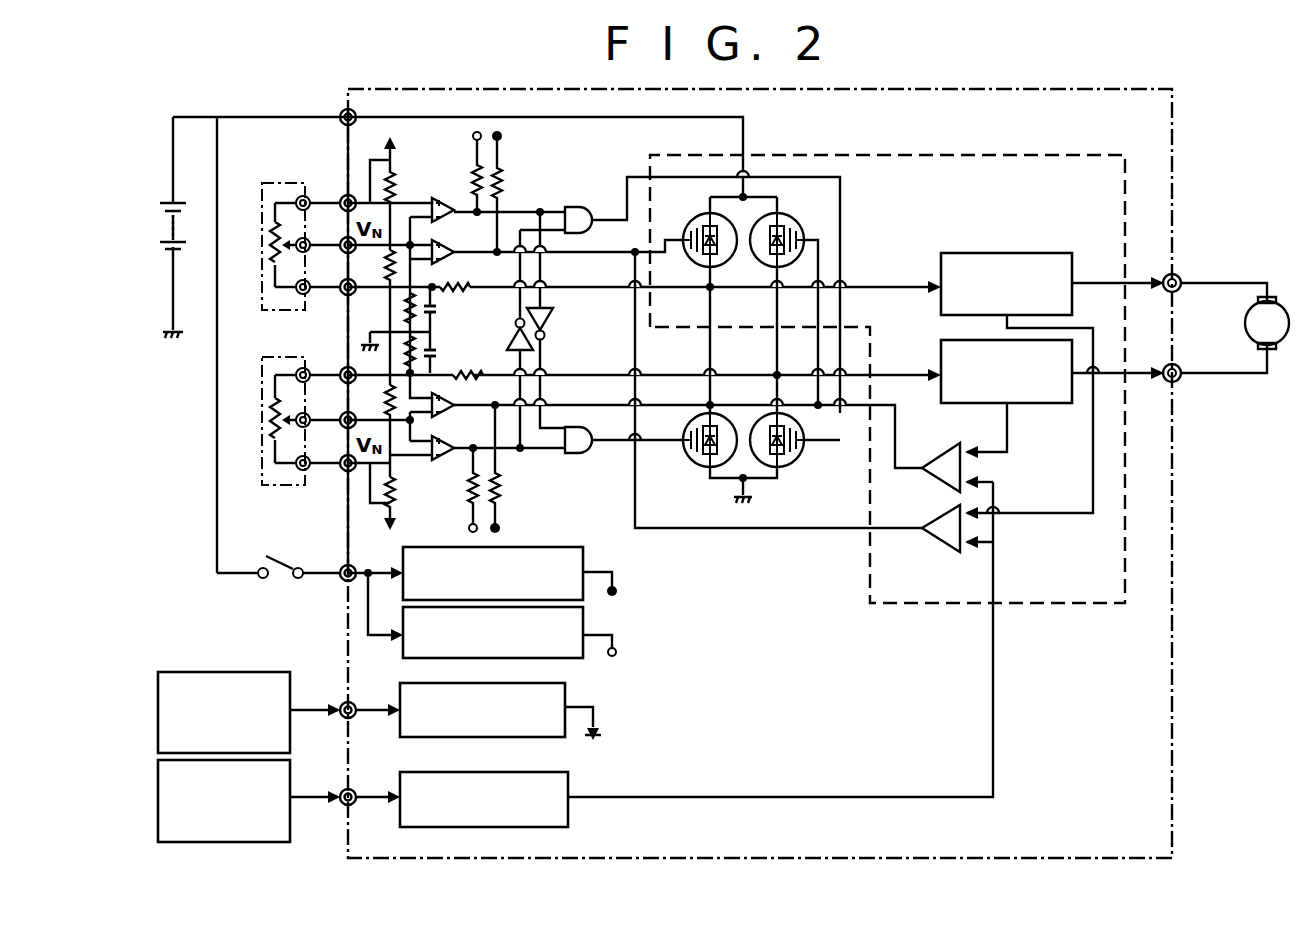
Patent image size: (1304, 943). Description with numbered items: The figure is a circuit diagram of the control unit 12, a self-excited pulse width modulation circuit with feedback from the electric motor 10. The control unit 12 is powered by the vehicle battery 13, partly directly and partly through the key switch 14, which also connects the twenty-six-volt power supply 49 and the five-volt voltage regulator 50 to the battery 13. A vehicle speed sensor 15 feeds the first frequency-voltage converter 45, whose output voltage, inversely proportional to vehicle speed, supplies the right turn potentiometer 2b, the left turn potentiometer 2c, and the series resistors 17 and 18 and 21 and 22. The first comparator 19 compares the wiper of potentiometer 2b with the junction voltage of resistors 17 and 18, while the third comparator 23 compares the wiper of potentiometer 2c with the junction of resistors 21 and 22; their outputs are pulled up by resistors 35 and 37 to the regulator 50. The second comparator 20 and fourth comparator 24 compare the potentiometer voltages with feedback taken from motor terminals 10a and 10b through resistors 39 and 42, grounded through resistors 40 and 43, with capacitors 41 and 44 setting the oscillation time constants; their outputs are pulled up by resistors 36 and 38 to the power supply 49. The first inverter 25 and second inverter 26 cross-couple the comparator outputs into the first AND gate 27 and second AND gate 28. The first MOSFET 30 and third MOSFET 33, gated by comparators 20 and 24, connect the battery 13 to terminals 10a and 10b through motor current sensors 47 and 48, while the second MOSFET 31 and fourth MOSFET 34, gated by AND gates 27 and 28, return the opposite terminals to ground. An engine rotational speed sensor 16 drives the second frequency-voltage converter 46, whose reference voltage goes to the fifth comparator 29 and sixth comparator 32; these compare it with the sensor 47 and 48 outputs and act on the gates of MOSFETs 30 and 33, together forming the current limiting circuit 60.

The right turn potentiometer 2b is at (270, 183).
The left turn potentiometer 2c is at (272, 487).
The electric motor 10 is at (1246, 335).
The first terminal 10a is at (1180, 278).
The second terminal 10b is at (1180, 386).
The control unit 12 is at (1174, 142).
The vehicle battery 13 is at (164, 223).
The key switch 14 is at (278, 578).
The vehicle speed sensor 15 is at (226, 672).
The engine rotational speed sensor 16 is at (156, 806).
The resistor 17 is at (394, 179).
The resistor 18 is at (388, 268).
The first comparator 19 is at (438, 200).
The second comparator 20 is at (449, 216).
The resistor 21 is at (396, 497).
The resistor 22 is at (388, 394).
The third comparator 23 is at (441, 462).
The fourth comparator 24 is at (450, 449).
The first inverter 25 is at (556, 310).
The second inverter 26 is at (508, 331).
The first AND gate 27 is at (580, 207).
The second AND gate 28 is at (586, 455).
The fifth comparator 29 is at (945, 548).
The first MOSFET 30 is at (684, 216).
The second MOSFET 31 is at (802, 452).
The sixth comparator 32 is at (938, 462).
The third MOSFET 33 is at (812, 204).
The fourth MOSFET 34 is at (686, 460).
The pull-up resistor 35 is at (471, 186).
The pull-up resistor 36 is at (500, 186).
The pull-up resistor 37 is at (472, 496).
The pull-up resistor 38 is at (500, 490).
The resistor 39 is at (464, 284).
The resistor 40 is at (404, 312).
The capacitor 41 is at (439, 309).
The resistor 42 is at (464, 378).
The resistor 43 is at (362, 352).
The capacitor 44 is at (438, 354).
The first frequency-voltage converter 45 is at (568, 696).
The second frequency-voltage converter 46 is at (570, 776).
The motor current sensor 47 is at (977, 252).
The motor current sensor 48 is at (1022, 405).
The 26-volt power supply 49 is at (545, 548).
The 5-volt voltage regulator 50 is at (586, 616).
The current limiting circuit 60 is at (1008, 606).